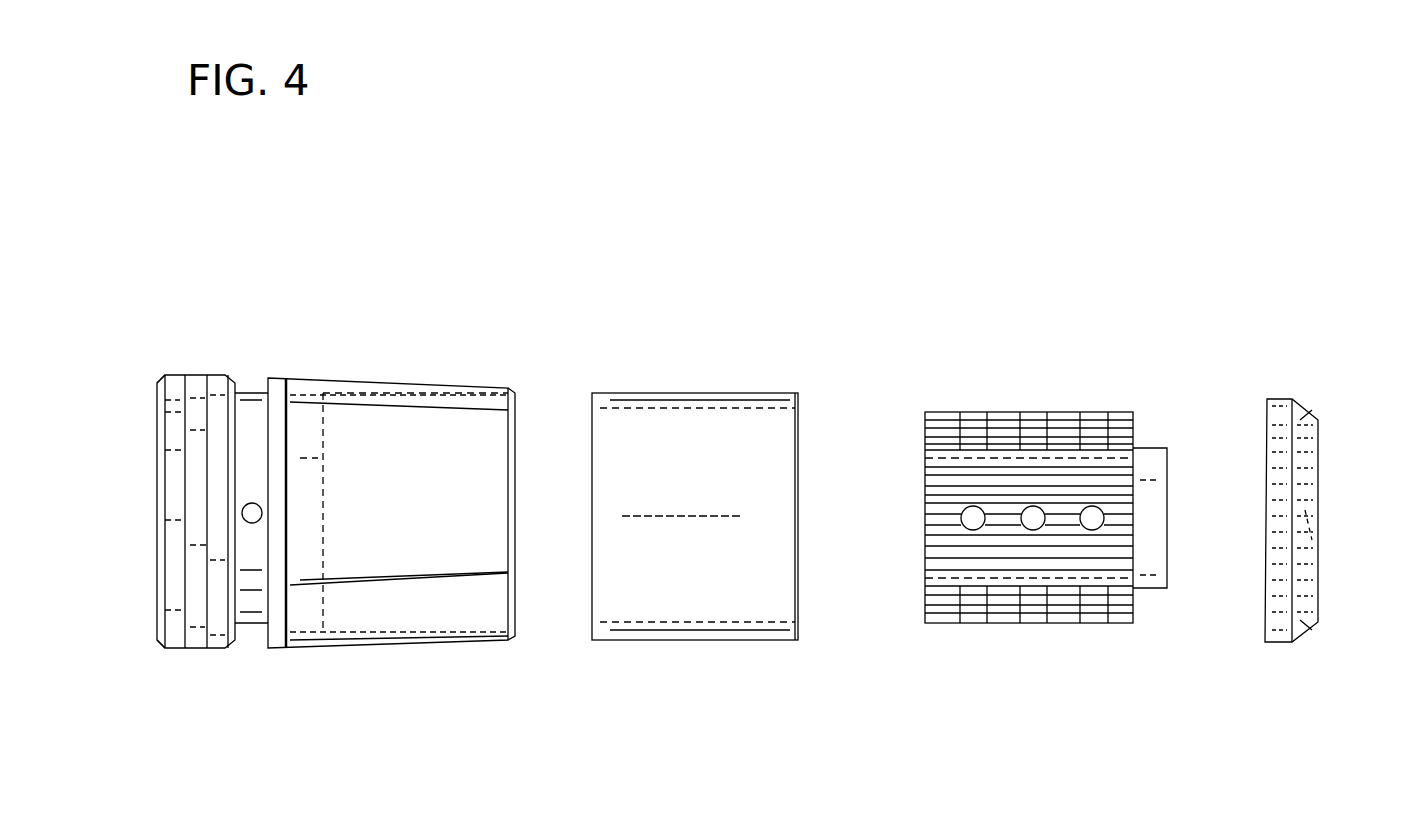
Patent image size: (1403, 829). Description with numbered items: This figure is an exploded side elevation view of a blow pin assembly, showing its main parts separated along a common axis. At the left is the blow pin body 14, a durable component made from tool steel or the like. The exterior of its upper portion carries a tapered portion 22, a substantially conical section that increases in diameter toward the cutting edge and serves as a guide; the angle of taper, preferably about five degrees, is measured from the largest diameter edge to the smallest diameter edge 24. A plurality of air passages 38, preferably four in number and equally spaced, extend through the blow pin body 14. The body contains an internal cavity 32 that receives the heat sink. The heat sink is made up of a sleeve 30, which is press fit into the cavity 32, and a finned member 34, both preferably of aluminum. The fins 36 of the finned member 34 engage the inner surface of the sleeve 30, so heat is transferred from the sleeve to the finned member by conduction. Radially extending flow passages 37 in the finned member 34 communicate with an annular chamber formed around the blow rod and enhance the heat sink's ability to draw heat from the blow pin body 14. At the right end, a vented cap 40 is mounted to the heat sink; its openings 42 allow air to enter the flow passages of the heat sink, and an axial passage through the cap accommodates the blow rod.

The blow pin body 14 is at (425, 385).
The tapered portion 22 is at (200, 392).
The smallest diameter edge 24 is at (322, 476).
The sleeve 30 is at (672, 393).
The cavity 32 is at (455, 553).
The finned member 34 is at (1118, 400).
The fins 36 is at (930, 455).
The radially extending flow passages 37 is at (973, 518).
The air passages 38 is at (252, 515).
The vented cap 40 is at (1292, 399).
The openings 42 is at (1322, 532).